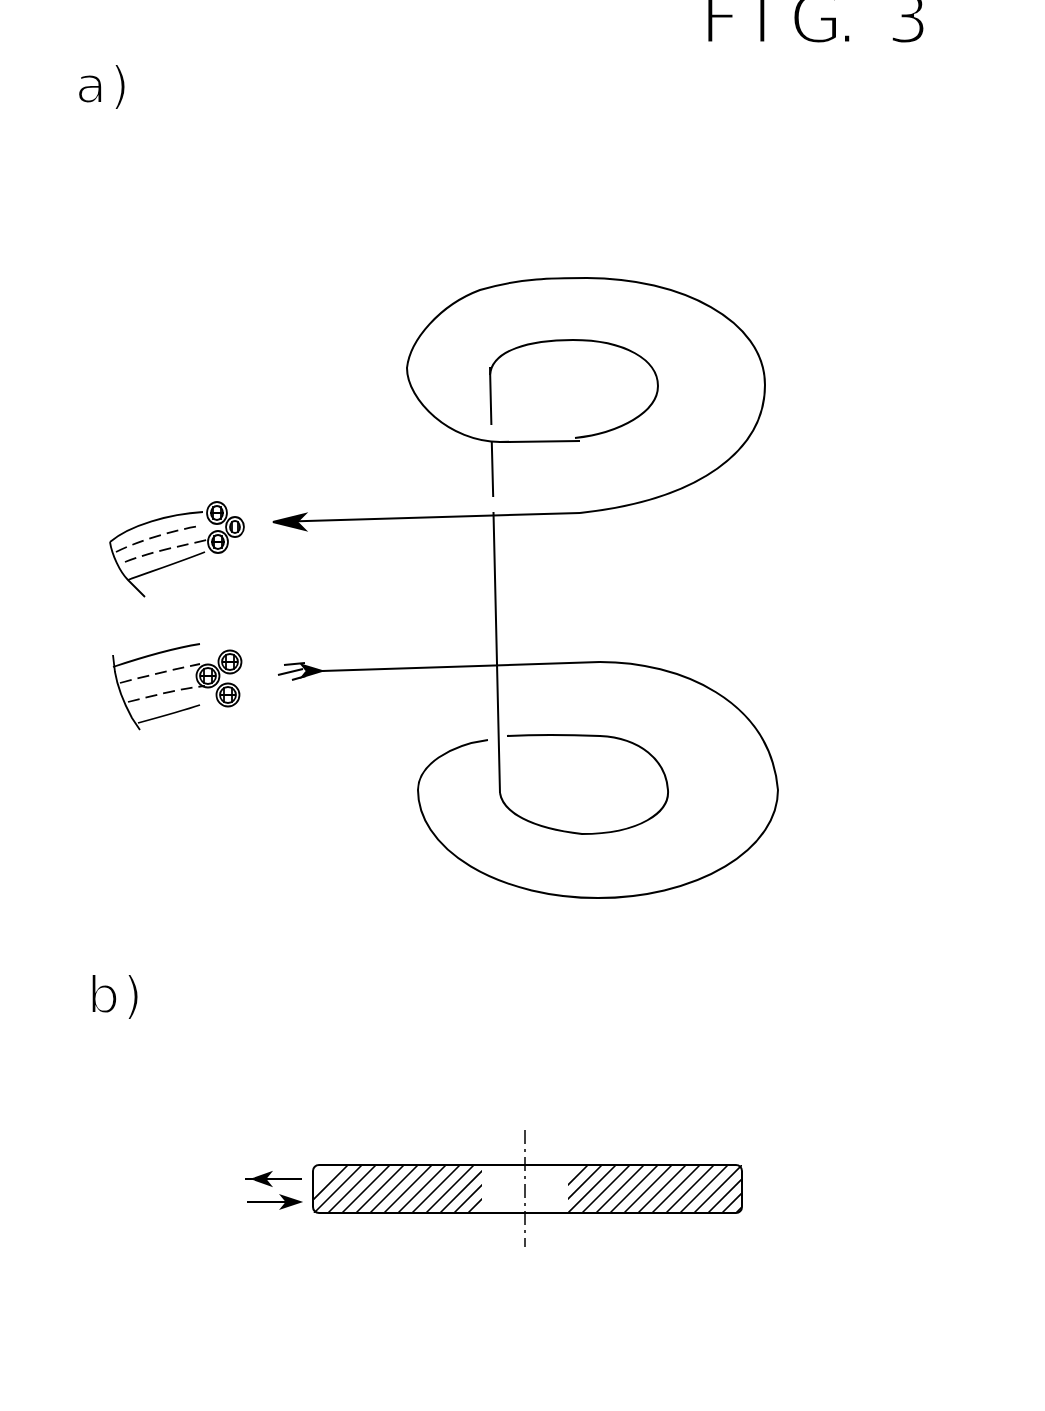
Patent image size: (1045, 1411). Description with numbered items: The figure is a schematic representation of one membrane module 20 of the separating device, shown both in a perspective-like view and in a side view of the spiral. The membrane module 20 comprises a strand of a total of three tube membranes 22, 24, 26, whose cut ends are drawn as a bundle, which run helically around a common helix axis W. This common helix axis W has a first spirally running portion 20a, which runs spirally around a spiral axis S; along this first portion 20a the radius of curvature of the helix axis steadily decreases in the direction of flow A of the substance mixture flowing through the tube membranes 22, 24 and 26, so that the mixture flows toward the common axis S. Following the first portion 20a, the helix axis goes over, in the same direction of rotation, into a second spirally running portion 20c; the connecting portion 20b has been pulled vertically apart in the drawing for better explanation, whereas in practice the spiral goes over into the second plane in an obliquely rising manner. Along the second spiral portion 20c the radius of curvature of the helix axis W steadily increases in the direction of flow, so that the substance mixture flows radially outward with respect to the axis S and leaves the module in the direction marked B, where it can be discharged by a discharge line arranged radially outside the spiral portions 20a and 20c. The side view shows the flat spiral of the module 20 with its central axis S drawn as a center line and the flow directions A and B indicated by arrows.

The membrane module 20 is at (402, 208).
The first spirally running portion 20a is at (612, 897).
The portion 20b is at (495, 580).
The second spirally running portion 20c is at (578, 277).
The tube membrane 22 is at (238, 707).
The tube membrane 24 is at (197, 707).
The tube membrane 26 is at (243, 649).
The common helix axis W is at (407, 661).
The direction of flow A is at (350, 672).
The direction B is at (320, 505).
The spiral axis S is at (530, 1232).